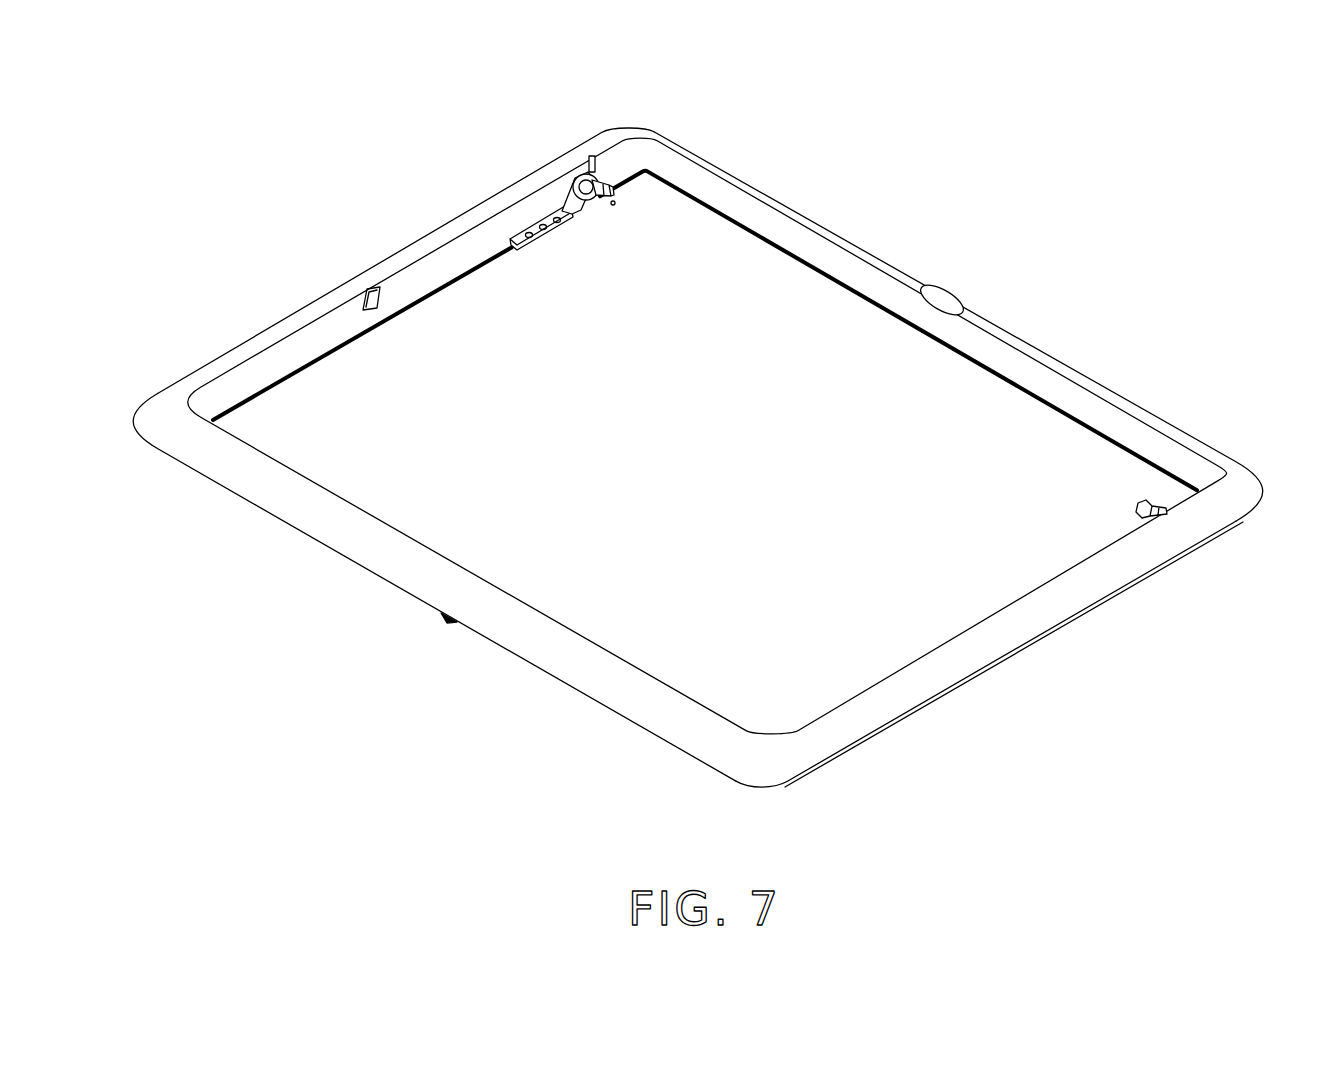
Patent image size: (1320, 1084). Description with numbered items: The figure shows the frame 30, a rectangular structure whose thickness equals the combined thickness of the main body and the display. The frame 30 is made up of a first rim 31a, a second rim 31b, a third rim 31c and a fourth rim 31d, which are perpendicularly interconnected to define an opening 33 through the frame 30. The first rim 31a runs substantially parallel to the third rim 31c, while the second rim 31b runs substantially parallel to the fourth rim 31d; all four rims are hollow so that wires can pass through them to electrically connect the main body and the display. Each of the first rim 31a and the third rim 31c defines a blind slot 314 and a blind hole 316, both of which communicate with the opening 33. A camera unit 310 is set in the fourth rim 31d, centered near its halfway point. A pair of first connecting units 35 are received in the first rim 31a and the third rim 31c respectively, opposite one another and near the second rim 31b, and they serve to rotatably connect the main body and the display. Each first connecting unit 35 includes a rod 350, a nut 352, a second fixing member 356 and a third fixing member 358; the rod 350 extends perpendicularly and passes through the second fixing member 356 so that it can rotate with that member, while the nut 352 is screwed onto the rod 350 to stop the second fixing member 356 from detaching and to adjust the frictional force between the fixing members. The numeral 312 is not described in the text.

The frame 30 is at (698, 453).
The first rim 31a is at (317, 342).
The second rim 31b is at (880, 262).
The third rim 31c is at (1020, 628).
The fourth rim 31d is at (382, 553).
The opening 33 is at (297, 453).
The camera unit 310 is at (443, 618).
The hole 312 is at (942, 303).
The blind slot 314 is at (593, 160).
The blind hole 316 is at (367, 287).
The first connecting unit 35 is at (829, 318).
The rod 350 is at (580, 170).
The nut 352 is at (613, 203).
The second fixing member 356 is at (578, 183).
The third fixing member 358 is at (516, 233).